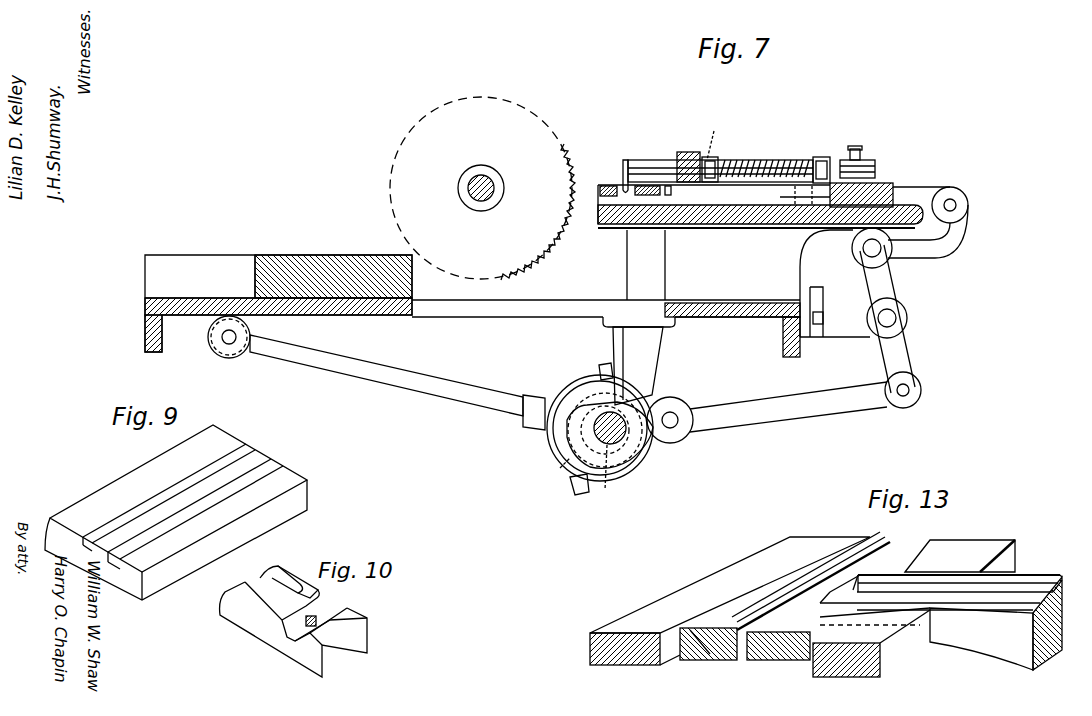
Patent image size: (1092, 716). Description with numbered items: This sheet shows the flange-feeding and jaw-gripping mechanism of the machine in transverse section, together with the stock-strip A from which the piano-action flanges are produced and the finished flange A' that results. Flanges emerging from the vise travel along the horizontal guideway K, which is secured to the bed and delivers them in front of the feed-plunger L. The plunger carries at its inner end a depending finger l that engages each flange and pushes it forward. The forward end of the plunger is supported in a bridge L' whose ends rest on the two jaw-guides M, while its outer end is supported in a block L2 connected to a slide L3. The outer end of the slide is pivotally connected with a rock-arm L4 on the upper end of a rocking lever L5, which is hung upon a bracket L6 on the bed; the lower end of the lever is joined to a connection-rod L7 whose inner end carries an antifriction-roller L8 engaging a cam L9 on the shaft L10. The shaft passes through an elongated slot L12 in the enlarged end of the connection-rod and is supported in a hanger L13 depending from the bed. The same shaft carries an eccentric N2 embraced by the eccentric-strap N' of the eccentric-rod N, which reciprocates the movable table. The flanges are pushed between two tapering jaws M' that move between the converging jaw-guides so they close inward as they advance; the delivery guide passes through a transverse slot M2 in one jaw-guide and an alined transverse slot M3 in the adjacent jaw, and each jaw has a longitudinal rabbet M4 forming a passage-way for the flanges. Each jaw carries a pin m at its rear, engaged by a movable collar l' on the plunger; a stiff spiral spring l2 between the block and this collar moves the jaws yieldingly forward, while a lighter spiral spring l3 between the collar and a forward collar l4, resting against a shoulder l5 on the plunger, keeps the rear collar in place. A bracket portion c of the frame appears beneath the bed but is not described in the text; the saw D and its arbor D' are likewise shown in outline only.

In FIG. 7, the circular saw D is at (482, 188).
In FIG. 7, the saw arbor D' is at (478, 178).
In FIG. 7, the eccentric-rod N is at (397, 382).
In FIG. 7, the eccentric-strap N' is at (598, 425).
In FIG. 7, the eccentric N2 is at (553, 449).
In FIG. 7, the feed-plunger L is at (720, 160).
In FIG. 7, the bridge L' is at (688, 156).
In FIG. 7, the block L2 is at (862, 160).
In FIG. 7, the slide L3 is at (905, 192).
In FIG. 7, the rock-arm L4 is at (945, 240).
In FIG. 7, the rocking lever L5 is at (898, 287).
In FIG. 7, the bracket L6 is at (853, 284).
In FIG. 7, the connection-rod L7 is at (805, 402).
In FIG. 7, the antifriction-roller L8 is at (680, 435).
In FIG. 7, the cam L9 is at (603, 384).
In FIG. 7, the shaft L10 is at (550, 472).
In FIG. 7, the elongated slot L12 is at (594, 475).
In FIG. 7, the hanger L13 is at (638, 366).
In FIG. 7, the depending finger l is at (613, 177).
In FIG. 7, the movable collar l' is at (821, 153).
In FIG. 7, the stiff spiral spring l2 is at (840, 160).
In FIG. 7, the lighter spiral spring l3 is at (746, 160).
In FIG. 7, the movable collar l4 is at (712, 160).
In FIG. 7, the shoulder l5 is at (714, 136).
In FIG. 7, the horizontal guideway K is at (660, 186).
In FIG. 13, the horizontal guideway K is at (937, 626).
In FIG. 7, the jaw M' is at (760, 206).
In FIG. 13, the jaw M' is at (745, 662).
In FIG. 7, the pin m is at (805, 195).
In FIG. 7, the bracket c is at (732, 330).
In FIG. 9, the stock-strip A is at (176, 512).
In FIG. 10, the flange A' is at (293, 621).
In FIG. 13, the jaw-guide M is at (802, 601).
In FIG. 13, the transverse slot M2 is at (940, 570).
In FIG. 13, the transverse slot M3 is at (915, 560).
In FIG. 13, the longitudinal rabbet M4 is at (760, 650).